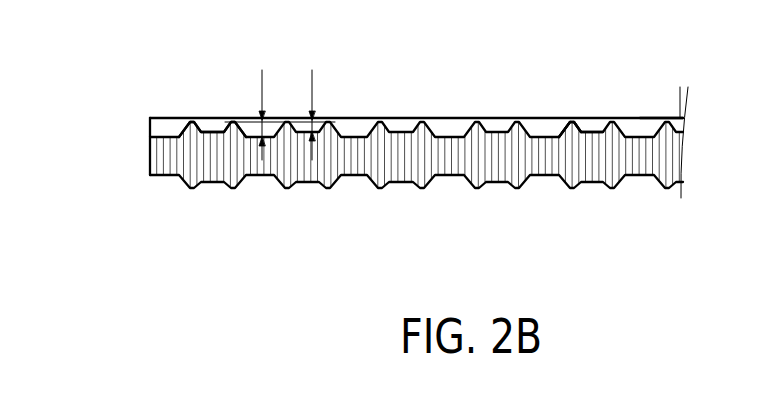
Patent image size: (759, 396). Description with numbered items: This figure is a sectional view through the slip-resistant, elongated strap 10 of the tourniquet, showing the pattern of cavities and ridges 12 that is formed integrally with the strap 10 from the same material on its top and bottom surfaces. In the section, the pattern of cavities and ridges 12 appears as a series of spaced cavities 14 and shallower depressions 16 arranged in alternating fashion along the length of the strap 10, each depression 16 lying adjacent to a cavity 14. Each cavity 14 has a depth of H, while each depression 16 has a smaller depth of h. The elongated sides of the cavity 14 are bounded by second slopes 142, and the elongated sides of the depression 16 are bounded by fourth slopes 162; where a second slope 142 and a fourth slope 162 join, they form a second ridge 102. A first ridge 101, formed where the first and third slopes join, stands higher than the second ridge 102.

The strap 10 is at (593, 29).
The pattern of cavities and ridges 12 is at (434, 113).
The cavity 14 is at (163, 137).
The depression 16 is at (212, 131).
The first ridge 101 is at (655, 117).
The second ridge 102 is at (568, 125).
The second slope 142 is at (567, 124).
The fourth slope 162 is at (567, 127).